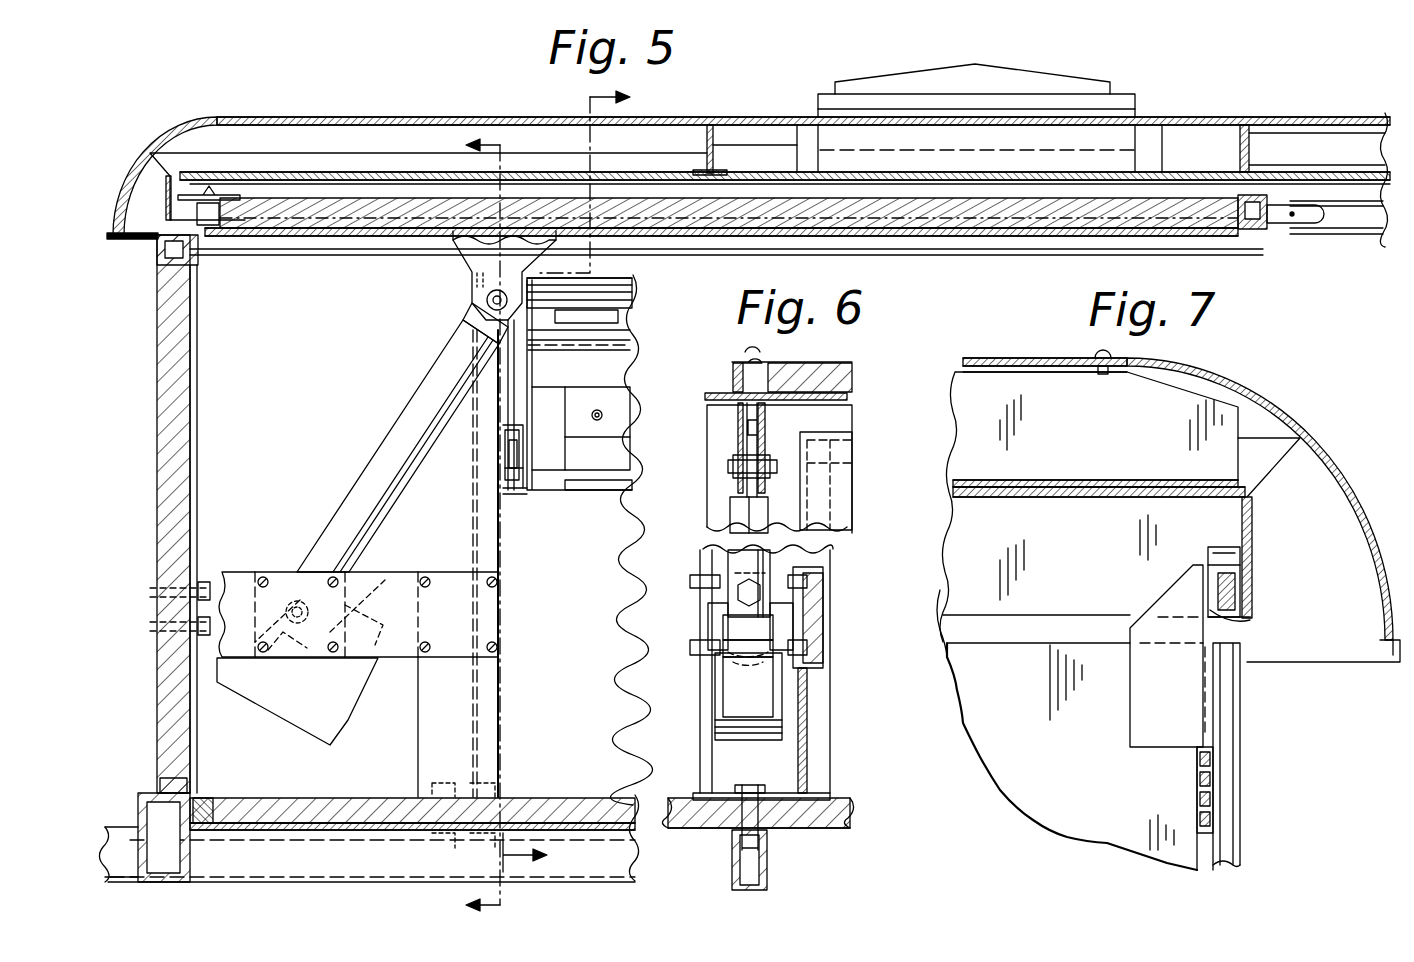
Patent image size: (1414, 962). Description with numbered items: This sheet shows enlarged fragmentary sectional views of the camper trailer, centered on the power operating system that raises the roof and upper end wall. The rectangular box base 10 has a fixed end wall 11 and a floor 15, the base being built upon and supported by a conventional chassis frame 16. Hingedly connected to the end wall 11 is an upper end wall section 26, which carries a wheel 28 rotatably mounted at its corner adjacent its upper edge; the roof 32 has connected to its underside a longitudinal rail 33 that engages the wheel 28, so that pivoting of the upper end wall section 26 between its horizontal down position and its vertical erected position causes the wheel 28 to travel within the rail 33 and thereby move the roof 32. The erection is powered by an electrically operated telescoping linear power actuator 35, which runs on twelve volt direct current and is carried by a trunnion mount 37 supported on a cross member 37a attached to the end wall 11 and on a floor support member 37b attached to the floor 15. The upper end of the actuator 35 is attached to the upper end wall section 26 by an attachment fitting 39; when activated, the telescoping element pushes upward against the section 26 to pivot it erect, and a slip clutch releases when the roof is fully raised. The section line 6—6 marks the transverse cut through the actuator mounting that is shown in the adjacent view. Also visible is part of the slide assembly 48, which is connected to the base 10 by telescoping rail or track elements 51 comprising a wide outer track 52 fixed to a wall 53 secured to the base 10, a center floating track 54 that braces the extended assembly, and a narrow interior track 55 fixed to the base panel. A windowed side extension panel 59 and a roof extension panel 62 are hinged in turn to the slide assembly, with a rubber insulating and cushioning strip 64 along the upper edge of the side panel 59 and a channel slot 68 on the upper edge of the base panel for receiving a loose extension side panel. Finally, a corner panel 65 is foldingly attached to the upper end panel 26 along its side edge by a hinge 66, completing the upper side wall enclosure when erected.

In FIG. 5, the section line 6— 6 is at (470, 525).
In FIG. 5, the box base 10 is at (583, 479).
In FIG. 5, the fixed end wall 11 is at (168, 506).
In FIG. 5, the floor 15 is at (322, 810).
In FIG. 6, the floor 15 is at (820, 818).
In FIG. 5, the chassis frame 16 is at (628, 860).
In FIG. 6, the chassis frame 16 is at (770, 865).
In FIG. 5, the upper end wall section 26 is at (1052, 216).
In FIG. 6, the upper end wall section 26 is at (820, 375).
In FIG. 7, the upper end wall section 26 is at (1008, 792).
In FIG. 5, the wheel 28 is at (1318, 224).
In FIG. 7, the wheel 28 is at (1222, 568).
In FIG. 5, the roof 32 is at (232, 112).
In FIG. 7, the roof 32 is at (1233, 370).
In FIG. 5, the longitudinal rail 33 is at (1352, 215).
In FIG. 7, the longitudinal rail 33 is at (1235, 622).
In FIG. 5, the telescoping linear power actuator 35 is at (378, 462).
In FIG. 6, the telescoping linear power actuator 35 is at (730, 511).
In FIG. 5, the trunnion mount 37 is at (300, 600).
In FIG. 6, the trunnion mount 37 is at (788, 610).
In FIG. 5, the cross member 37a is at (378, 585).
In FIG. 6, the cross member 37a is at (695, 632).
In FIG. 5, the floor support member 37b is at (418, 735).
In FIG. 6, the floor support member 37b is at (700, 735).
In FIG. 5, the attachment fitting 39 is at (462, 272).
In FIG. 6, the attachment fitting 39 is at (735, 433).
In FIG. 5, the slide assembly 48 is at (607, 497).
In FIG. 5, the sliding telescoping rail or track element 51 is at (494, 476).
In FIG. 5, the wide outer track 52 is at (505, 418).
In FIG. 5, the wall 53 is at (503, 553).
In FIG. 5, the center floating track 54 is at (506, 496).
In FIG. 5, the narrow interior track 55 is at (508, 450).
In FIG. 5, the windowed side extension panel 59 is at (645, 278).
In FIG. 5, the roof extension panel 62 is at (630, 335).
In FIG. 5, the rubber insulating and cushioning strip 64 is at (632, 291).
In FIG. 5, the corner panel 65 is at (1004, 246).
In FIG. 7, the corner panel 65 is at (1223, 735).
In FIG. 5, the hinge 66 is at (262, 238).
In FIG. 7, the hinge 66 is at (1205, 795).
In FIG. 5, the channel slot 68 is at (548, 400).